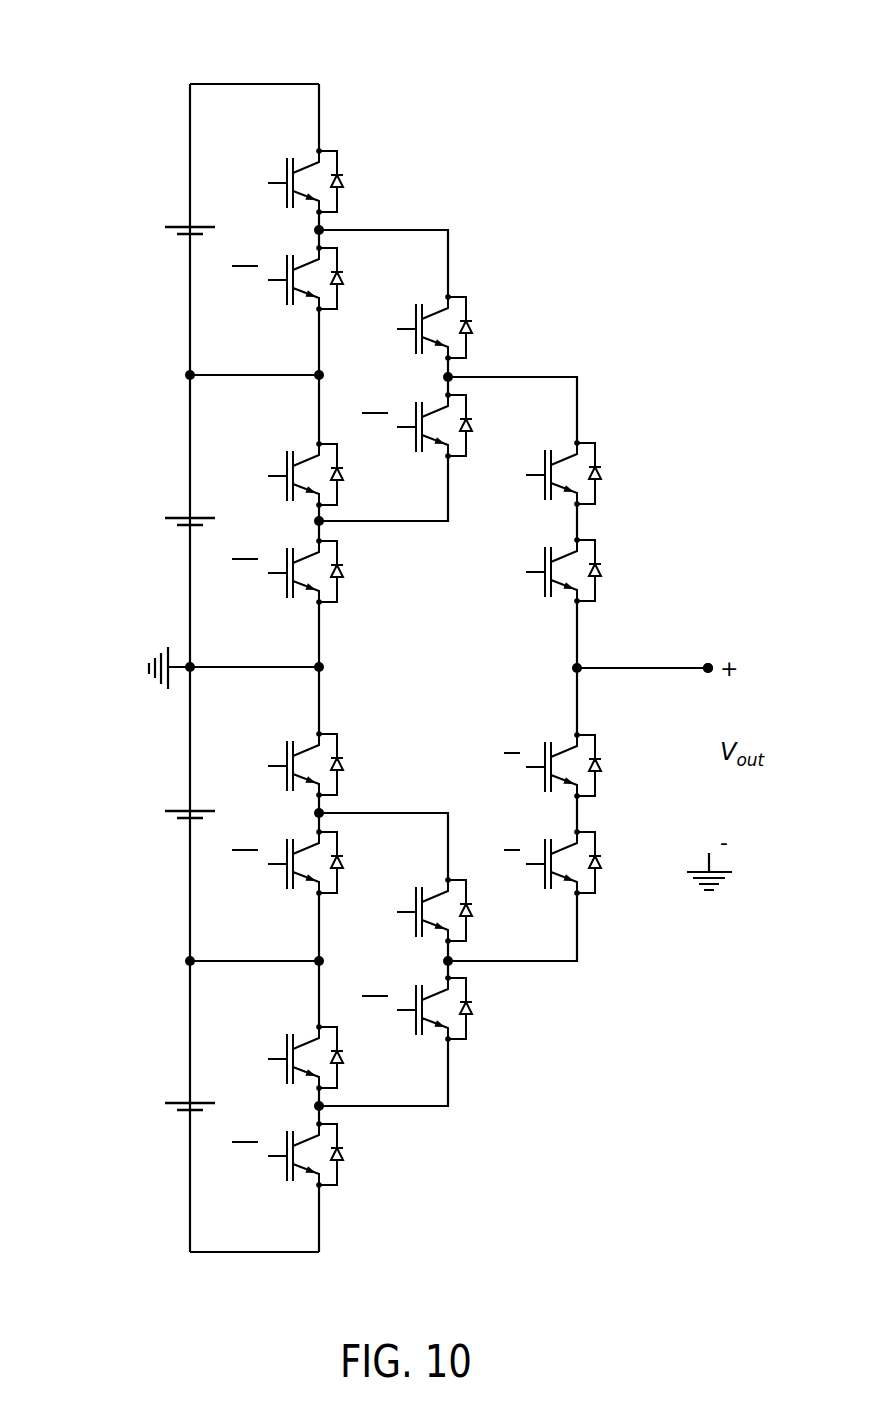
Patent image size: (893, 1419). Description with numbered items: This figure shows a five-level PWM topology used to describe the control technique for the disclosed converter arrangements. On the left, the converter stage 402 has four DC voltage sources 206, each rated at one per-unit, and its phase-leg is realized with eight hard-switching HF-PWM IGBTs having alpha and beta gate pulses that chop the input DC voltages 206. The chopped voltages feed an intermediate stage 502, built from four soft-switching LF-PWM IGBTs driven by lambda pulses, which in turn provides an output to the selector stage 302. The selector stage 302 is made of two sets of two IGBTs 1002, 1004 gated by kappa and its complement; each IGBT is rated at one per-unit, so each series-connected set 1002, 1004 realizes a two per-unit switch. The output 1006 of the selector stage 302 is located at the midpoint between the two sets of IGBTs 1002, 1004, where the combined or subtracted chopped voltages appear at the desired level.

The DC voltage source 206 is at (125, 92).
The converter stage 402 is at (353, 62).
The intermediate stage 502 is at (487, 210).
The selector stage 302 is at (593, 601).
The first set of IGBTs 1002 is at (597, 457).
The second set of IGBTs 1004 is at (597, 748).
The output 1006 is at (709, 660).